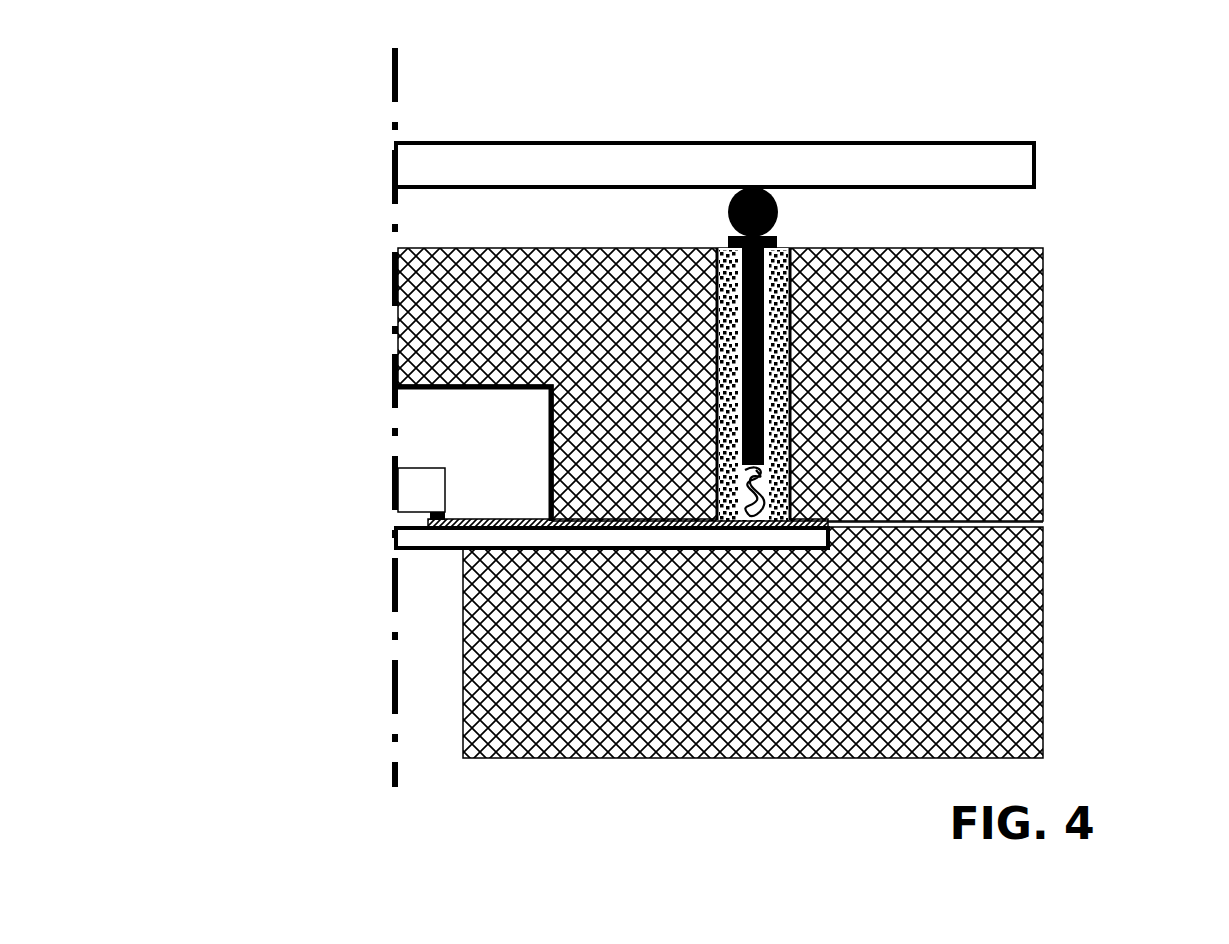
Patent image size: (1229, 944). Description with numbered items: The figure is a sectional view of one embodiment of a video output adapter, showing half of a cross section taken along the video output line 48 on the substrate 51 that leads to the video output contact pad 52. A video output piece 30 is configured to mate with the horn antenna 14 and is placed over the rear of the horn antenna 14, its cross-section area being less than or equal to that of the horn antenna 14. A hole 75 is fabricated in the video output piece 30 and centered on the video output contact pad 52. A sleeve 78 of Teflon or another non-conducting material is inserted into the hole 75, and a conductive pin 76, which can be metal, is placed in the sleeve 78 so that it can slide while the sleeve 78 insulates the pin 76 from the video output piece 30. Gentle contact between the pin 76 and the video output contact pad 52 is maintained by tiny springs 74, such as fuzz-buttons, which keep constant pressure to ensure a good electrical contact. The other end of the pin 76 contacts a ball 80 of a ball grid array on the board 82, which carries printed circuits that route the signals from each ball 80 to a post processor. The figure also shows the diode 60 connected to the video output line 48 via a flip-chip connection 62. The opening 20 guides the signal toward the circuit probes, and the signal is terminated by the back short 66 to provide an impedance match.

The horn antenna 14 is at (1030, 640).
The opening 20 is at (412, 668).
The video output piece 30 is at (1027, 392).
The video output line 48 is at (615, 528).
The substrate 51 is at (600, 538).
The video output contact pad 52 is at (742, 528).
The diode 60 is at (422, 480).
The flip-chip connection 62 is at (440, 516).
The back short 66 is at (468, 382).
The springs 74 is at (762, 508).
The hole 75 is at (790, 447).
The conductive pin 76 is at (760, 357).
The sleeve 78 is at (795, 272).
The ball 80 is at (778, 208).
The board 82 is at (583, 160).